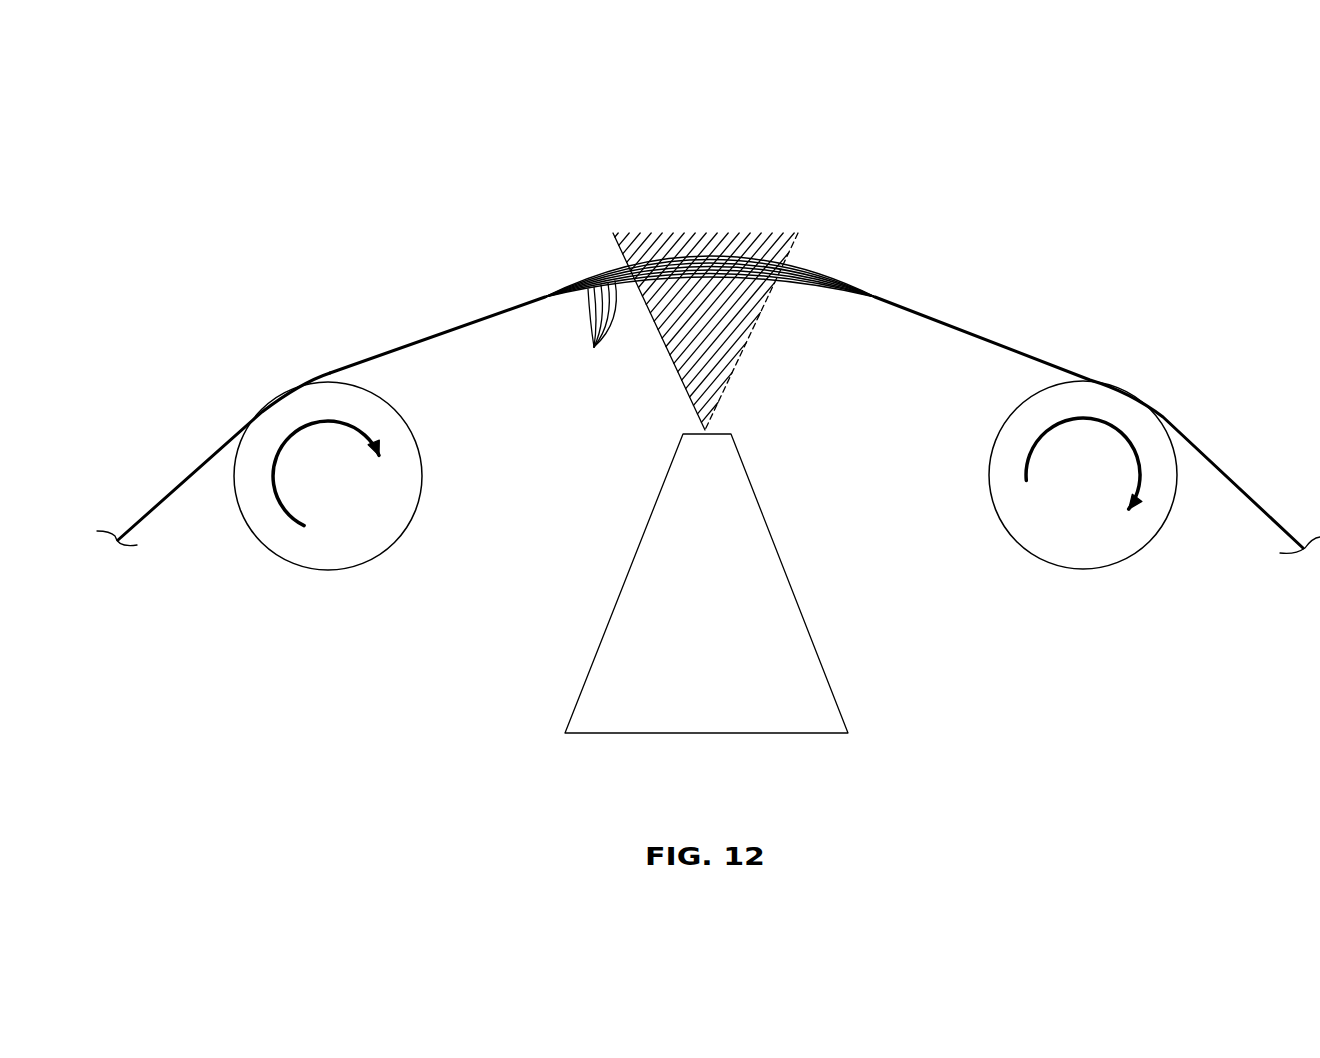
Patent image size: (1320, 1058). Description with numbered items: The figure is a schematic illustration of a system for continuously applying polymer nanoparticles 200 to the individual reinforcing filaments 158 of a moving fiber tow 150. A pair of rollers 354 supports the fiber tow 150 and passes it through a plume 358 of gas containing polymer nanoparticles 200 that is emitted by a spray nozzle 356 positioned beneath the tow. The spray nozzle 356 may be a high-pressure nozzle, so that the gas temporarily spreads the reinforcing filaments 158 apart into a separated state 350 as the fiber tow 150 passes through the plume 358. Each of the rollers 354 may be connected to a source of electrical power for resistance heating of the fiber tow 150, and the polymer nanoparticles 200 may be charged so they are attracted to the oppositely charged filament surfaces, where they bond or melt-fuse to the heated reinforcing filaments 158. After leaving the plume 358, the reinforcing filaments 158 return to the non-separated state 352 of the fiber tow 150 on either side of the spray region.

The polymer nanoparticles 200 is at (822, 170).
The fiber tow 150 is at (182, 484).
The non-separated state 352 is at (433, 331).
The separated state 350 is at (847, 223).
The reinforcing filaments 158 is at (590, 329).
The plume 358 is at (747, 343).
The spray nozzle 356 is at (662, 492).
The rollers 354 is at (323, 572).